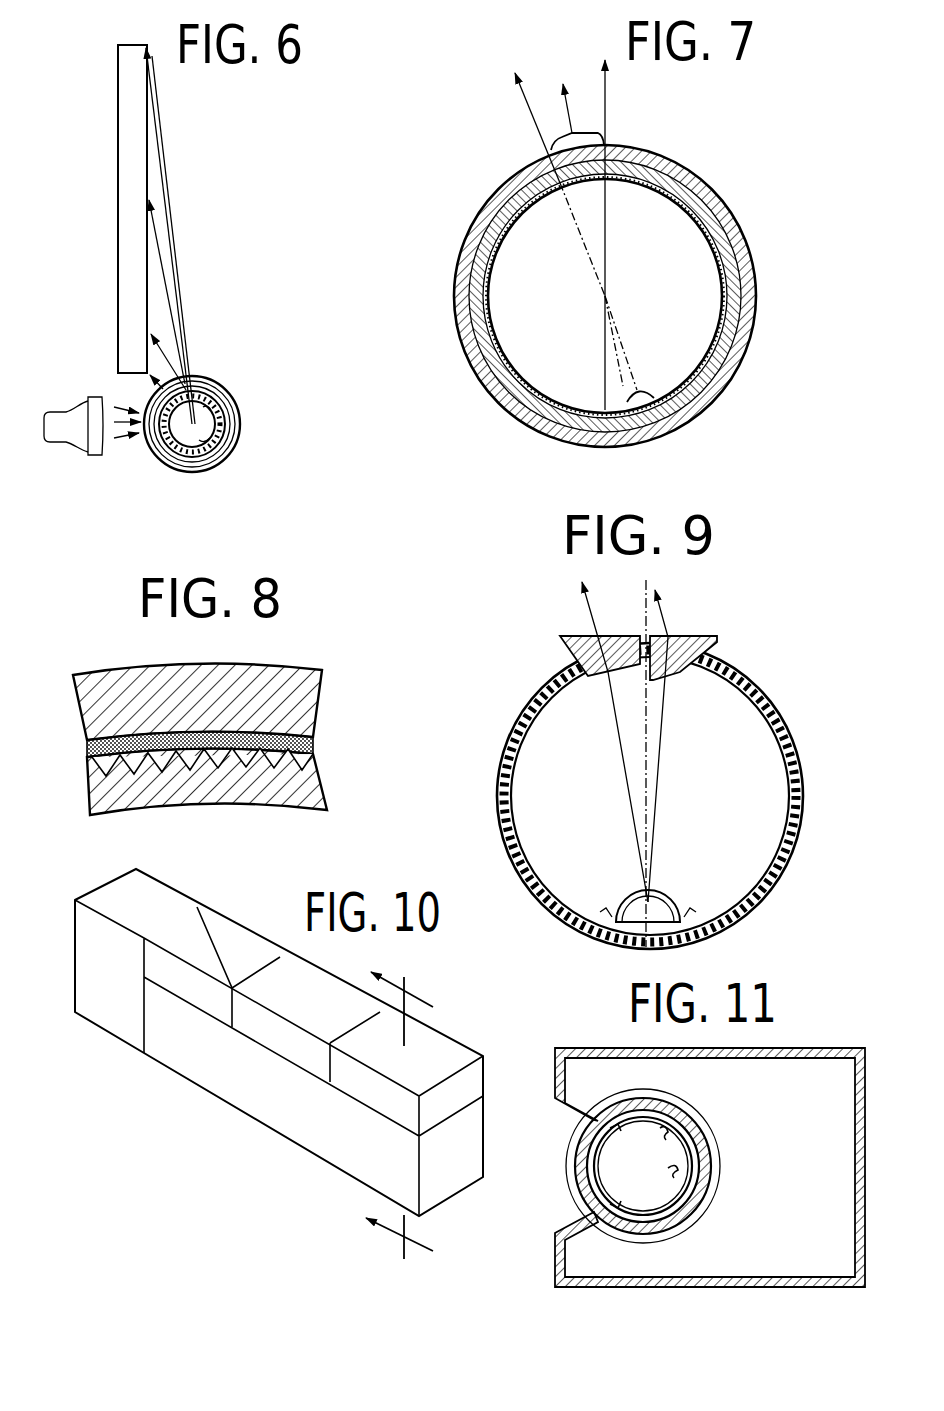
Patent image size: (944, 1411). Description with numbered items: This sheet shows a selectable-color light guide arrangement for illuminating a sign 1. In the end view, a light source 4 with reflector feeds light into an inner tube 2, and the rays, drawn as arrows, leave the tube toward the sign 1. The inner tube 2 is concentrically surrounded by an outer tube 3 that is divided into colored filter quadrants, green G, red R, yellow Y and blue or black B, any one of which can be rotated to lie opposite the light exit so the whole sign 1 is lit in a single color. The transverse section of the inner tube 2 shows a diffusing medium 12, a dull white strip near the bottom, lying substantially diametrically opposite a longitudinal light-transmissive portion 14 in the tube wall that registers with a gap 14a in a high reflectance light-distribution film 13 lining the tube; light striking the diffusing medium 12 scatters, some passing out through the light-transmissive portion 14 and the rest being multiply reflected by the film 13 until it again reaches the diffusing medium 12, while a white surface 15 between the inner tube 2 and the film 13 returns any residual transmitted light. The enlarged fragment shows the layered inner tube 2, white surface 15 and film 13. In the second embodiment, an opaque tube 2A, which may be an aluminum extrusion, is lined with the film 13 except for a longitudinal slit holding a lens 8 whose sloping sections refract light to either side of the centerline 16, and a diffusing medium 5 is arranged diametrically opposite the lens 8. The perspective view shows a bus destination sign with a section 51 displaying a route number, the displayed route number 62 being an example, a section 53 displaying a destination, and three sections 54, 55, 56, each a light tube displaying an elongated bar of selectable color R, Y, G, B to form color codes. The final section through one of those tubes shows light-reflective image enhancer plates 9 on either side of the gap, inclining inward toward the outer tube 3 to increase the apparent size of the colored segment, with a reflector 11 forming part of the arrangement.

In FIG. 6, the sign 1 is at (118, 170).
In FIG. 6, the inner tube 2 is at (170, 473).
In FIG. 7, the inner tube 2 is at (756, 350).
In FIG. 8, the inner tube 2 is at (305, 703).
In FIG. 11, the inner tube 2 is at (612, 1112).
In FIG. 9, the opaque tube 2A is at (797, 752).
In FIG. 6, the outer tube 3 is at (222, 392).
In FIG. 11, the outer tube 3 is at (684, 1222).
In FIG. 6, the light source 4 is at (83, 415).
In FIG. 9, the diffusing medium 5 is at (623, 890).
In FIG. 9, the lens 8 is at (709, 632).
In FIG. 11, the image enhancer plates 9 is at (572, 1113).
In FIG. 10, the reflector 11 is at (419, 1119).
In FIG. 6, the diffusing medium 12 is at (231, 447).
In FIG. 7, the diffusing medium 12 is at (675, 416).
In FIG. 11, the diffusing medium 12 is at (680, 1176).
In FIG. 6, the high reflectance light-distribution film 13 is at (238, 404).
In FIG. 7, the high reflectance light-distribution film 13 is at (668, 176).
In FIG. 8, the high reflectance light-distribution film 13 is at (318, 800).
In FIG. 9, the high reflectance light-distribution film 13 is at (739, 698).
In FIG. 11, the high reflectance light-distribution film 13 is at (668, 1130).
In FIG. 7, the light-transmissive portion 14 is at (572, 135).
In FIG. 7, the gap 14a is at (557, 180).
In FIG. 7, the white surface 15 is at (733, 260).
In FIG. 8, the white surface 15 is at (313, 748).
In FIG. 9, the centerline 16 is at (648, 588).
In FIG. 10, the section displaying bus route number 51 is at (279, 1031).
In FIG. 10, the section displaying bus destination 53 is at (280, 1122).
In FIG. 10, the section 54 is at (223, 943).
In FIG. 10, the section 55 is at (309, 983).
In FIG. 10, the section 56 is at (448, 1056).
In FIG. 10, the route number display 62 is at (107, 994).
In FIG. 6, the red R is at (204, 382).
In FIG. 11, the red R is at (644, 1089).
In FIG. 6, the green G is at (200, 472).
In FIG. 11, the green G is at (641, 1243).
In FIG. 6, the blue or black B is at (148, 455).
In FIG. 11, the blue or black B is at (722, 1166).
In FIG. 6, the yellow Y is at (242, 424).
In FIG. 11, the yellow Y is at (566, 1164).